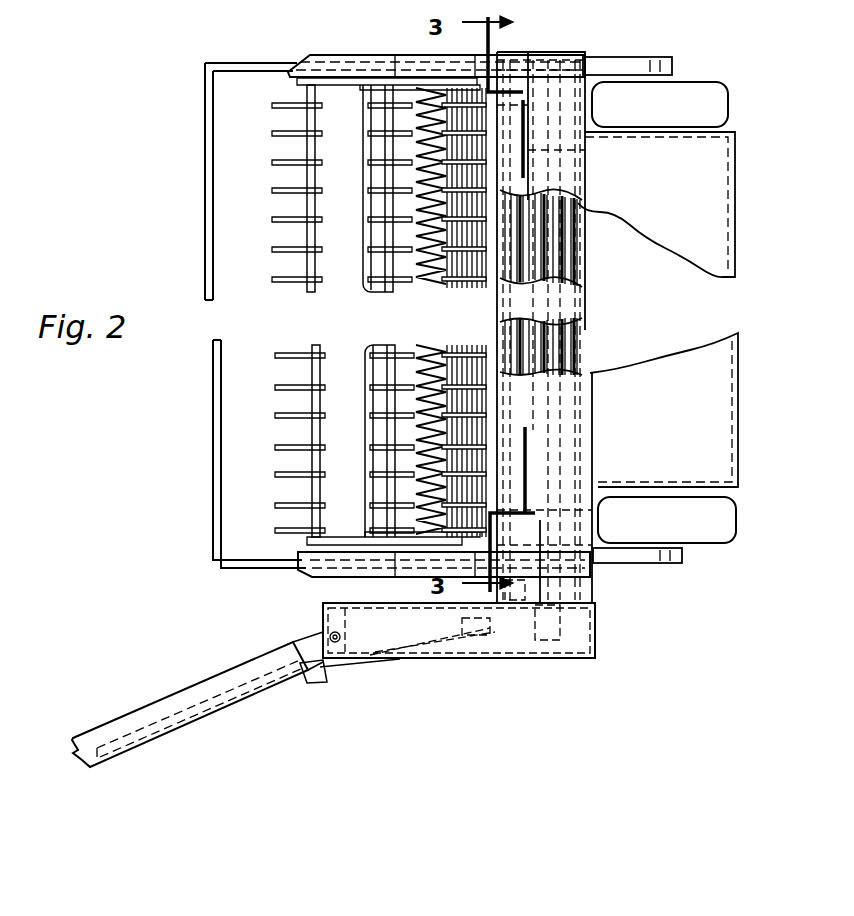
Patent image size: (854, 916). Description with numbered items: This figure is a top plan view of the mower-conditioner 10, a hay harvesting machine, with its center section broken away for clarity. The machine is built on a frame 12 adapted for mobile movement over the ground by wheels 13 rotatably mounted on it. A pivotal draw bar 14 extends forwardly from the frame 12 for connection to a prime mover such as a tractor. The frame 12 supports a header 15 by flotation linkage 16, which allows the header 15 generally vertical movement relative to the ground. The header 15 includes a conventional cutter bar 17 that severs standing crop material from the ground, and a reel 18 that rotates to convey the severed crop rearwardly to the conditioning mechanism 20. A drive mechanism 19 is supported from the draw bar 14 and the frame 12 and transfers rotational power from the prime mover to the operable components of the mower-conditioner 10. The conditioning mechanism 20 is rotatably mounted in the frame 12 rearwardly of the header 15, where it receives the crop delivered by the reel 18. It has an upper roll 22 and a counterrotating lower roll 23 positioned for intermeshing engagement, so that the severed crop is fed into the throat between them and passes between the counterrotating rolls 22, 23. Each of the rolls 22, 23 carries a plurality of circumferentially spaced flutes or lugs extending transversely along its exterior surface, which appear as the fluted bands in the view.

The mower-conditioner 10 is at (146, 149).
The frame 12 is at (557, 657).
The wheels 13 is at (698, 90).
The draw bar 14 is at (127, 718).
The header 15 is at (190, 430).
The flotation linkage 16 is at (440, 57).
The cutter bar 17 is at (433, 345).
The reel 18 is at (314, 347).
The drive mechanism 19 is at (305, 682).
The conditioning mechanism 20 is at (594, 232).
The upper roll 22 is at (507, 330).
The lower roll 23 is at (587, 287).